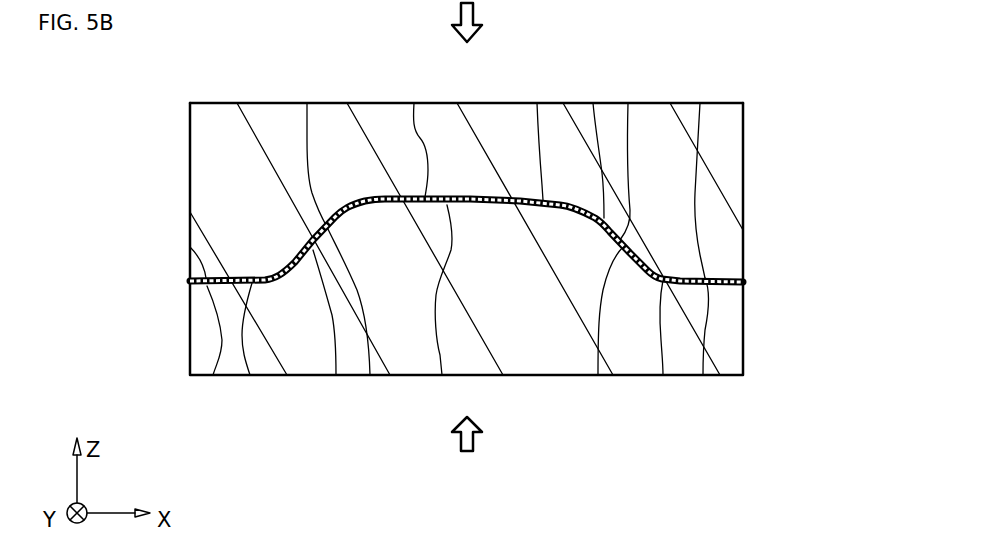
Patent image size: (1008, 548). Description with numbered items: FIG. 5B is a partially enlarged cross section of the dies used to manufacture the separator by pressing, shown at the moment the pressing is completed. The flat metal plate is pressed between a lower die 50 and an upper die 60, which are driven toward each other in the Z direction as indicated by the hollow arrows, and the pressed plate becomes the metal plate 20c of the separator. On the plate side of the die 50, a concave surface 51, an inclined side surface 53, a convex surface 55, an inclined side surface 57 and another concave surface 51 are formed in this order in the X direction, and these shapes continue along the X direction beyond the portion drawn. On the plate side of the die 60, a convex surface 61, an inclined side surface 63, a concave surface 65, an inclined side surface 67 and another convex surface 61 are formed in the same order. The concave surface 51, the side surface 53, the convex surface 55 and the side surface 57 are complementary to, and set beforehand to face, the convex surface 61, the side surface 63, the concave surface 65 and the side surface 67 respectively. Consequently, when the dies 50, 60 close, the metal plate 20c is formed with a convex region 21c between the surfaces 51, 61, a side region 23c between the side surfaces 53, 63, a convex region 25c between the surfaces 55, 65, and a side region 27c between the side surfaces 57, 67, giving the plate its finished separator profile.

The die 60 is at (746, 175).
The die 50 is at (746, 333).
The metal plate 20c is at (746, 281).
The convex surface 61 is at (190, 245).
The side surface 63 is at (307, 103).
The concave surface 65 is at (537, 103).
The side surface 67 is at (628, 103).
The concave surface 51 is at (213, 375).
The side surface 53 is at (336, 375).
The convex surface 55 is at (442, 375).
The side surface 57 is at (598, 375).
The convex region 21c is at (250, 375).
The side region 23c is at (370, 375).
The convex region 25c is at (414, 103).
The side region 27c is at (593, 103).